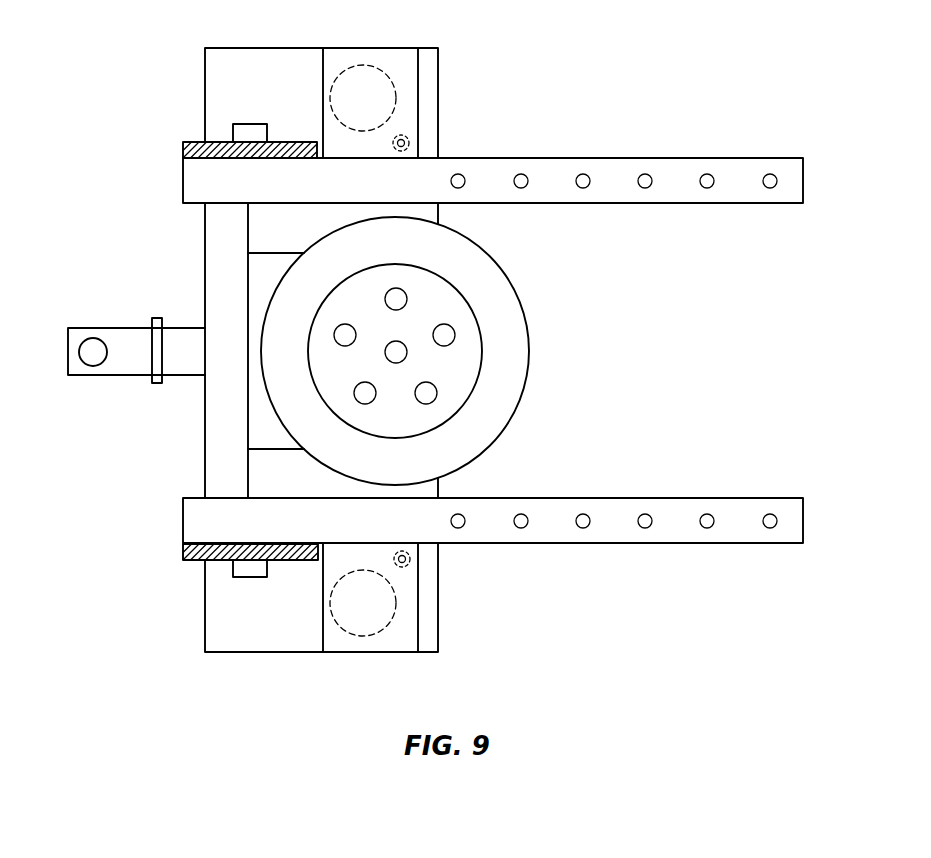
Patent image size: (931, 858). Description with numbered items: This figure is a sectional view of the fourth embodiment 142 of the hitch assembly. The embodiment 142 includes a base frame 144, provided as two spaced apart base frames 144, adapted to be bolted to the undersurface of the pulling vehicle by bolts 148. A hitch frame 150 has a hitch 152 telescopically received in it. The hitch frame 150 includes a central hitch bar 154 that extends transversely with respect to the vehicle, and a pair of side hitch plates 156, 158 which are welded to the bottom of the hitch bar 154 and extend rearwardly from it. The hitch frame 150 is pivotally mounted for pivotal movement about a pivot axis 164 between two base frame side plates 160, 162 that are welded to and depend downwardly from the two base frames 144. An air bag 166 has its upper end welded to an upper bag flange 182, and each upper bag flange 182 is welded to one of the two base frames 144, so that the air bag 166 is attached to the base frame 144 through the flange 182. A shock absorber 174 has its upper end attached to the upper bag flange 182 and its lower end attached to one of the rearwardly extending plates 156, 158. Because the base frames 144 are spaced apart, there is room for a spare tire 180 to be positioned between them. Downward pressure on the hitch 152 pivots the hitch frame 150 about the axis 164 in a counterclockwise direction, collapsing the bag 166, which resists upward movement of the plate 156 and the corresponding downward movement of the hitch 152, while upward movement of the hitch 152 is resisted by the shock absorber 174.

The fourth embodiment 142 is at (600, 36).
The base frame 144 is at (792, 212).
The bolts 148 is at (796, 558).
The hitch frame 150 is at (183, 385).
The hitch 152 is at (93, 328).
The central hitch bar 154 is at (212, 278).
The side hitch plate 156 is at (260, 224).
The side hitch plate 158 is at (260, 472).
The base frame side plate 160 is at (183, 150).
The base frame side plate 162 is at (183, 552).
The pivot axis 164 is at (250, 124).
The air bag 166 is at (376, 63).
The shock absorber 174 is at (419, 137).
The spare tire 180 is at (533, 350).
The upper bag flange 182 is at (333, 56).